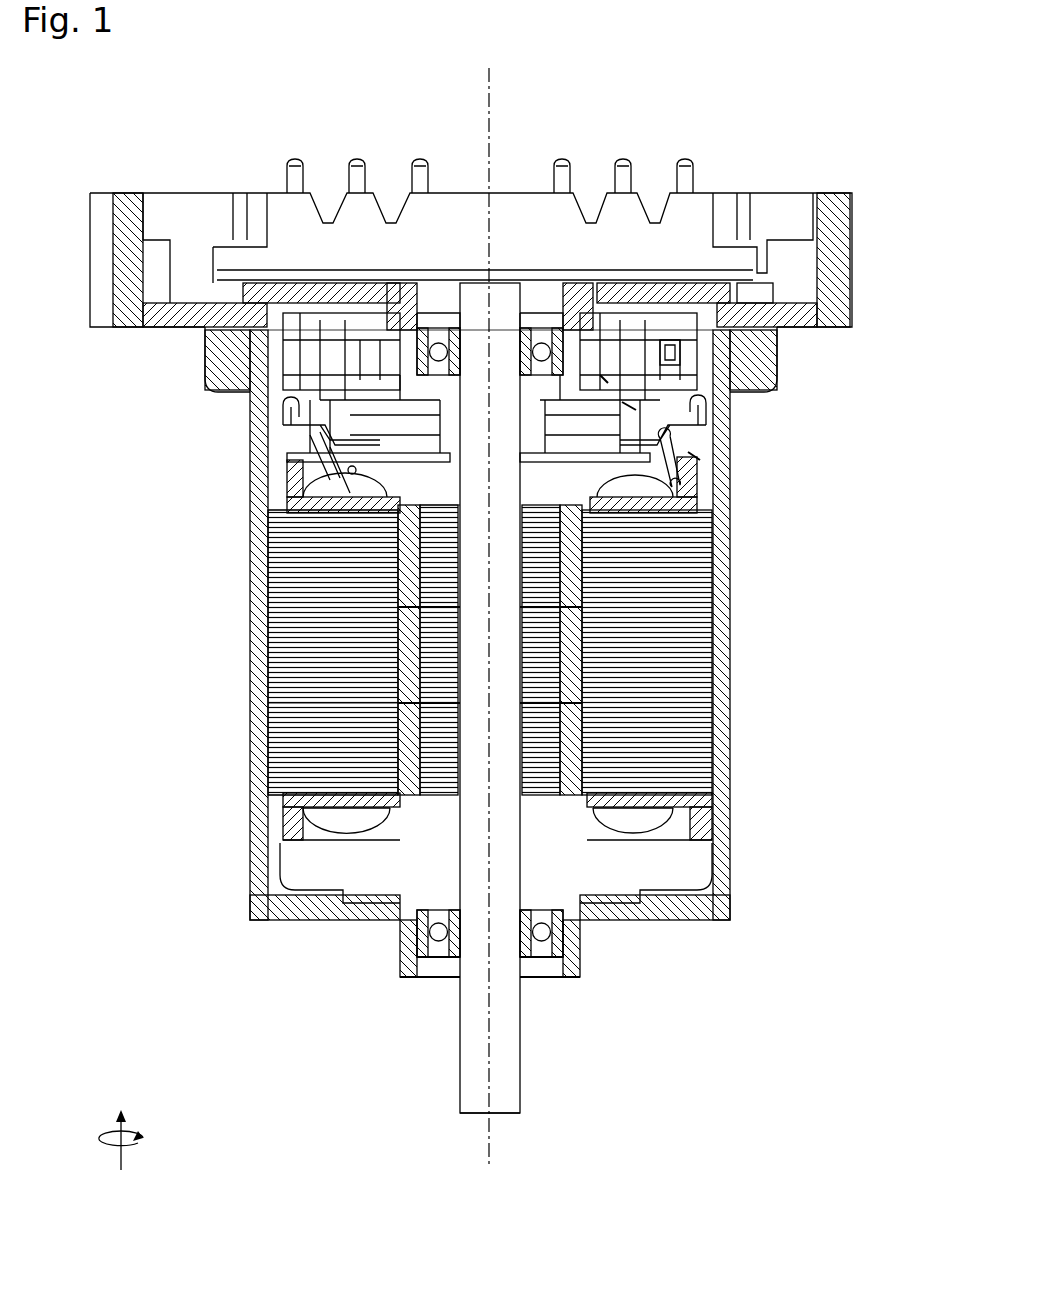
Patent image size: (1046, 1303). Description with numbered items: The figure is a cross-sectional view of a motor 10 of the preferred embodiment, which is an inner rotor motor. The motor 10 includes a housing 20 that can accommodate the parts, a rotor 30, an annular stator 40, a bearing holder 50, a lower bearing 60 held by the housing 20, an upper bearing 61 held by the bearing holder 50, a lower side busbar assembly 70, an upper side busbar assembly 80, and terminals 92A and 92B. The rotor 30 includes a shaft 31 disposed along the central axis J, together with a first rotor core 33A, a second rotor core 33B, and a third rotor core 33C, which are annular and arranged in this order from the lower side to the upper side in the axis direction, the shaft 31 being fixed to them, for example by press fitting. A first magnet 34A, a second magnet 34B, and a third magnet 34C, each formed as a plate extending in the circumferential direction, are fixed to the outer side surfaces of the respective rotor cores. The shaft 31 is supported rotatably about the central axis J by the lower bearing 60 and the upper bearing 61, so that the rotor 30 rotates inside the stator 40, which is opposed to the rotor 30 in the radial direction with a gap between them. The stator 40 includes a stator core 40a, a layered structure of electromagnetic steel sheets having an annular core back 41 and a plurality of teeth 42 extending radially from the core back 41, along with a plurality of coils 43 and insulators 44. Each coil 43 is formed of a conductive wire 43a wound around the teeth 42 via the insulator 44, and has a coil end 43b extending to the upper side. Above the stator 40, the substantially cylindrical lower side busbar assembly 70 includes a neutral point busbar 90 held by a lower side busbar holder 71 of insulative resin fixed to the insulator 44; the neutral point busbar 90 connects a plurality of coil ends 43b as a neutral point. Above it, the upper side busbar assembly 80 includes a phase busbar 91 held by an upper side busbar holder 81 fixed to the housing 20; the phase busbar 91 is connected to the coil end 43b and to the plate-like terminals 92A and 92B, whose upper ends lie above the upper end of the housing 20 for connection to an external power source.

The motor 10 is at (820, 152).
The housing 20 is at (738, 738).
The rotor 30 is at (538, 1087).
The shaft 31 is at (467, 1114).
The first rotor core 33A is at (443, 777).
The second rotor core 33B is at (437, 682).
The third rotor core 33C is at (430, 580).
The first magnet 34A is at (383, 775).
The second magnet 34B is at (410, 662).
The third magnet 34C is at (410, 543).
The stator 40 is at (491, 642).
The stator core 40a is at (575, 650).
The core back 41 is at (700, 557).
The teeth 42 is at (633, 663).
The coil 43 is at (557, 506).
The conductive wire 43a is at (600, 830).
The coil end 43b is at (600, 375).
The insulator 44 is at (690, 497).
The bearing holder 50 is at (681, 266).
The lower bearing 60 is at (544, 940).
The upper bearing 61 is at (442, 343).
The lower side busbar assembly 70 is at (705, 440).
The lower side busbar holder 71 is at (340, 437).
The upper side busbar assembly 80 is at (567, 387).
The upper side busbar holder 81 is at (290, 367).
The neutral point busbar 90 is at (707, 412).
The phase busbar 91 is at (663, 347).
The terminal 92A is at (420, 160).
The terminal 92B is at (685, 160).
The central axis J is at (497, 78).